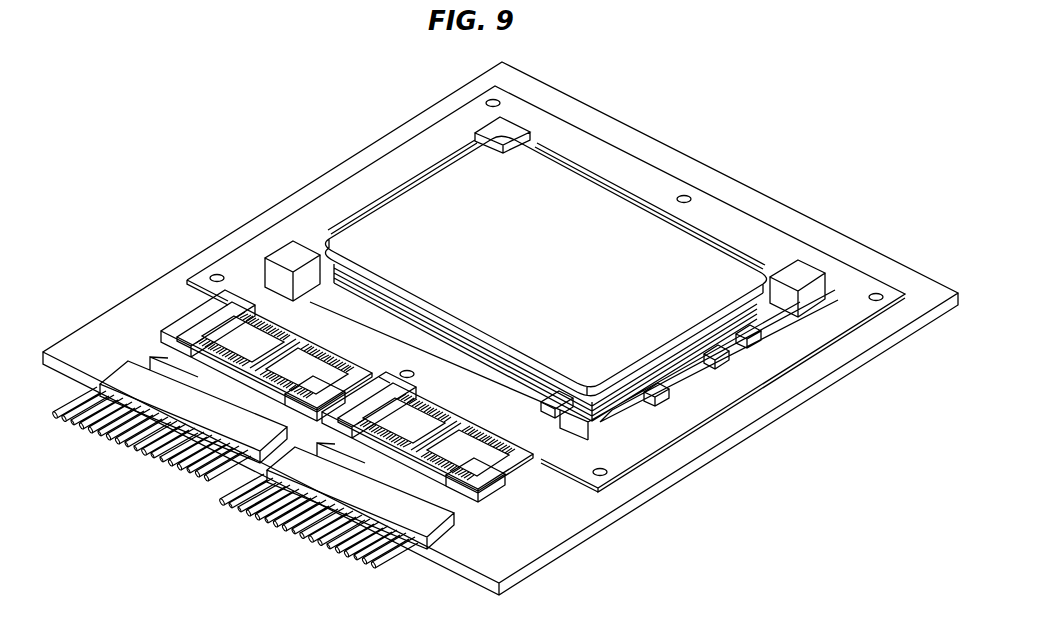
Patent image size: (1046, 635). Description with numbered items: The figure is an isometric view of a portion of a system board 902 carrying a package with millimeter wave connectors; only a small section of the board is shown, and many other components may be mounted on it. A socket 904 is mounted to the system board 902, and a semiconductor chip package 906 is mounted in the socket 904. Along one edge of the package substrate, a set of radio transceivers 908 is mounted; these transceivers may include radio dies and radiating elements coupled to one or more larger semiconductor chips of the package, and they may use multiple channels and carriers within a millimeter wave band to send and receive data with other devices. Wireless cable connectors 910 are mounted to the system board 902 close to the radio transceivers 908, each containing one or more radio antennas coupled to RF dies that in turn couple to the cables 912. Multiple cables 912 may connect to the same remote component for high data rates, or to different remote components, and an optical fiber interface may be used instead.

The system board 902 is at (733, 440).
The socket 904 is at (700, 357).
The semiconductor chip package 906 is at (405, 220).
The radio transceivers 908 is at (540, 388).
The wireless cable connectors 910 is at (253, 340).
The cables 912 is at (268, 527).